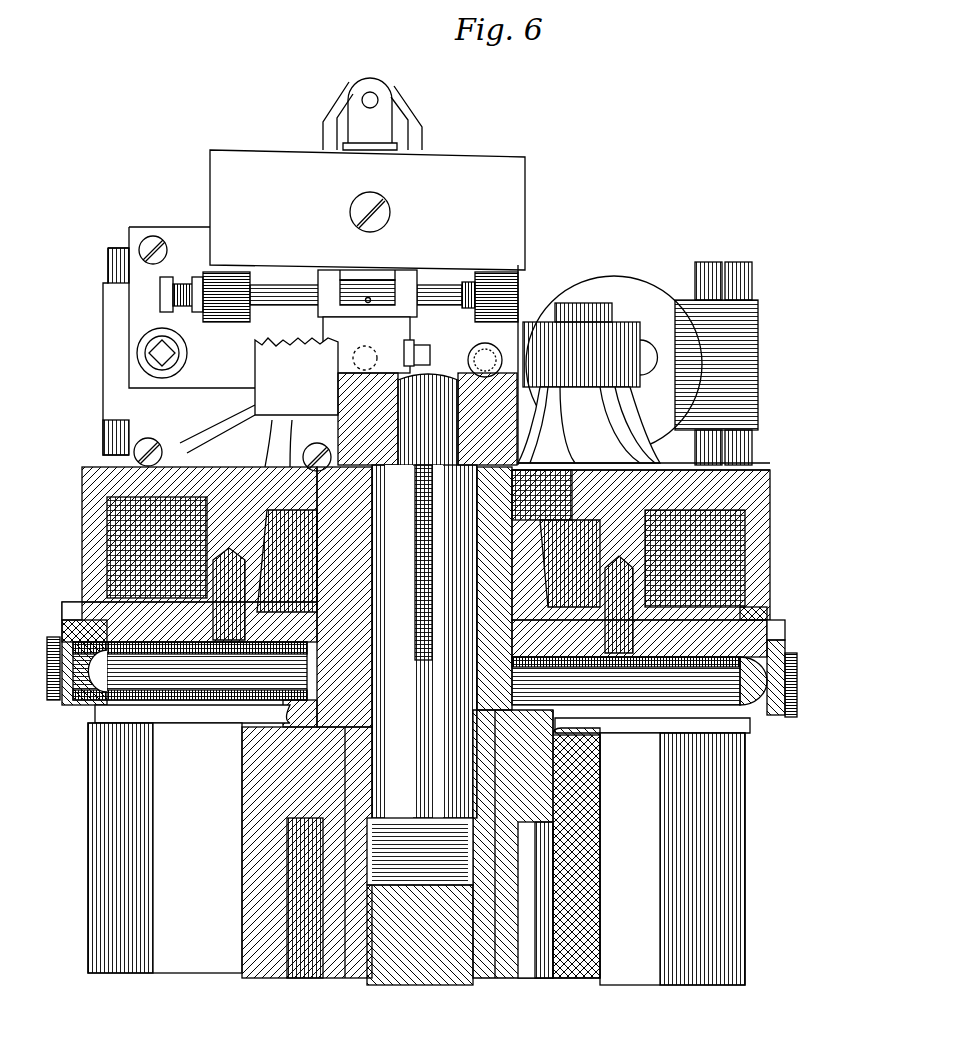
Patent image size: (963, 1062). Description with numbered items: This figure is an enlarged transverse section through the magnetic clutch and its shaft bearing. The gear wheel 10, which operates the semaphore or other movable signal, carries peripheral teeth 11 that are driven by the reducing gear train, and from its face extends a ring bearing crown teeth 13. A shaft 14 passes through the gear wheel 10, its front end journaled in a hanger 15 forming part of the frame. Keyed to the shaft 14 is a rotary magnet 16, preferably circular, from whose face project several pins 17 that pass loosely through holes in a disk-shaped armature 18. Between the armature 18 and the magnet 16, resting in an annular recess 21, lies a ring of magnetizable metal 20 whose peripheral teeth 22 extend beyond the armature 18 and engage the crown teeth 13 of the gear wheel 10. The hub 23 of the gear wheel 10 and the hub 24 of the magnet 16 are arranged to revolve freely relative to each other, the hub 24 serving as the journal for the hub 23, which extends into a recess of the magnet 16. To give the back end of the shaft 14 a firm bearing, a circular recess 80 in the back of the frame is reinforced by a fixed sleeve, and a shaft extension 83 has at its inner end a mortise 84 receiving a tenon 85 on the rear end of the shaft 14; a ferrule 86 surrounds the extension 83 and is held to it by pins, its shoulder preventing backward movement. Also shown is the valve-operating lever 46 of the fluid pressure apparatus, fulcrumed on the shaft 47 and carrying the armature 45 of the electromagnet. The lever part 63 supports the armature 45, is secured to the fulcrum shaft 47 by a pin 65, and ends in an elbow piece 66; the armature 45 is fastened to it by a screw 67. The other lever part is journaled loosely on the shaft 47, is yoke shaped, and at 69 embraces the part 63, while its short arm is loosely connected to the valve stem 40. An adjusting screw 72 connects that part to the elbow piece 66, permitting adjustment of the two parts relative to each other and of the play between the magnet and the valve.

The gear wheel 10 is at (429, 728).
The peripheral teeth 11 is at (427, 677).
The crown teeth 13 is at (792, 619).
The shaft 14 is at (424, 596).
The hanger 15 is at (396, 351).
The rotary magnet 16 is at (448, 532).
The pins 17 is at (486, 538).
The armature 18 is at (445, 647).
The ring of magnetizable metal 20 is at (432, 596).
The annular recess 21 is at (775, 588).
The peripheral teeth 22 is at (60, 592).
The hub 23 is at (597, 734).
The hub 24 is at (296, 395).
The valve stem 40 is at (365, 358).
The armature 45 is at (367, 210).
The lever 46 is at (391, 116).
The fulcrum shaft 47 is at (339, 304).
The lever part 63 is at (367, 287).
The pin 65 is at (381, 296).
The elbow piece 66 is at (370, 114).
The screw 67 is at (344, 211).
The yoke portion 69 is at (352, 215).
The adjusting screw 72 is at (345, 91).
The circular recess 80 is at (416, 874).
The shaft extension 83 is at (421, 871).
The mortise 84 is at (417, 956).
The tenon 85 is at (420, 851).
The ferrule 86 is at (420, 922).